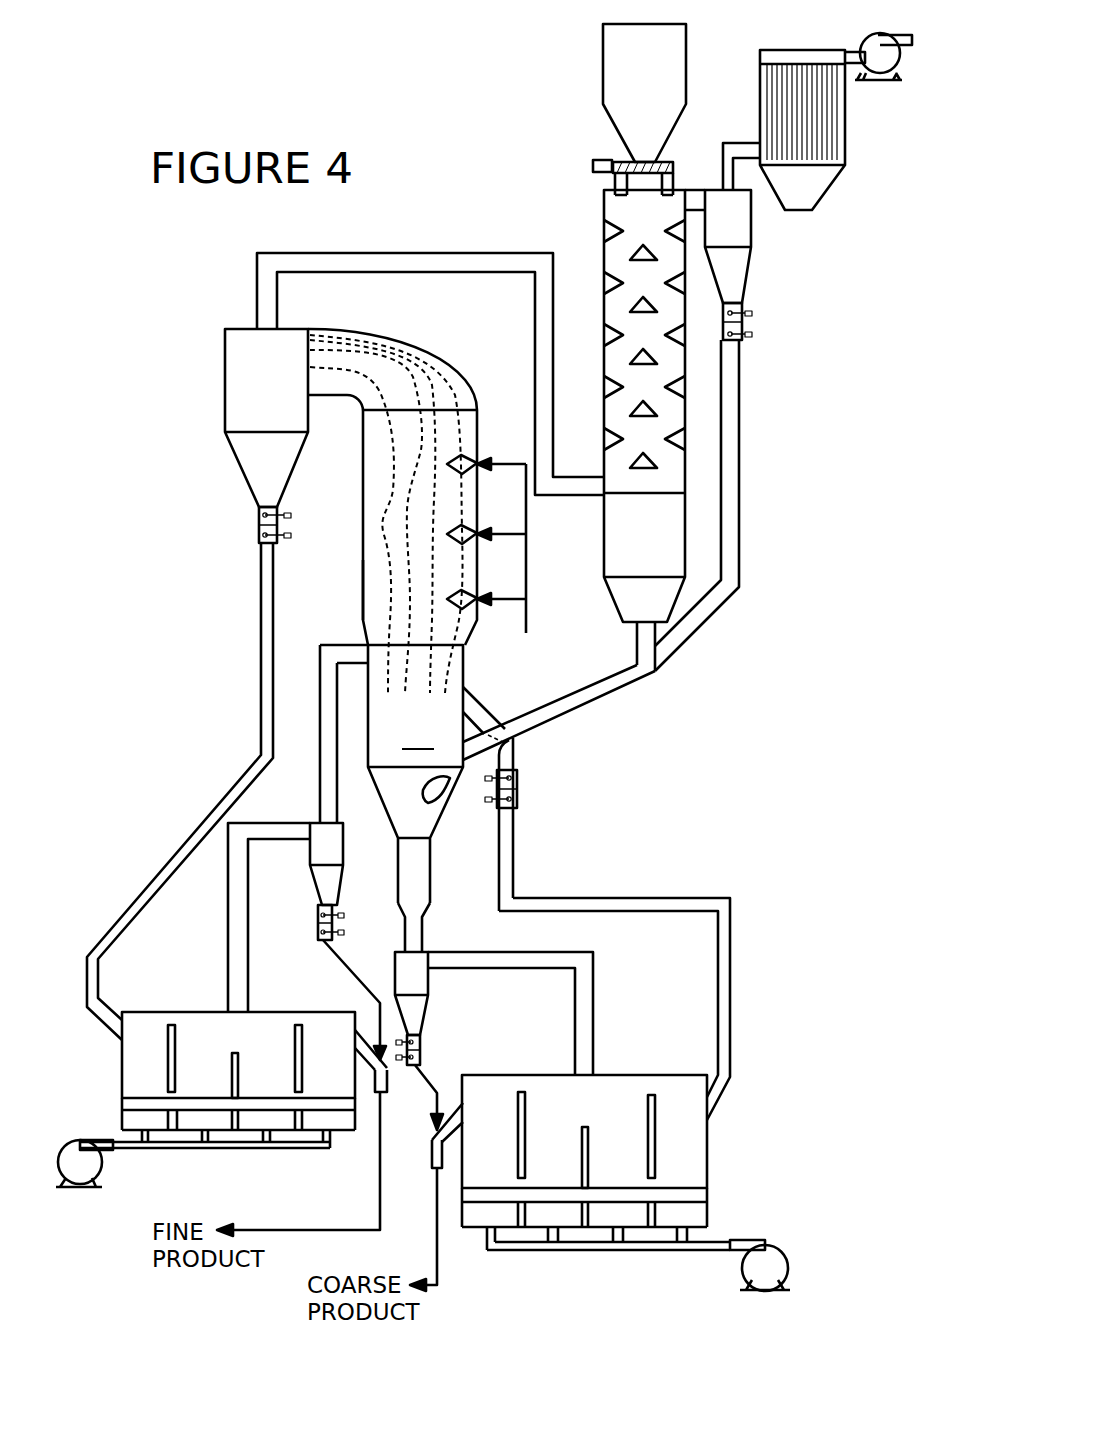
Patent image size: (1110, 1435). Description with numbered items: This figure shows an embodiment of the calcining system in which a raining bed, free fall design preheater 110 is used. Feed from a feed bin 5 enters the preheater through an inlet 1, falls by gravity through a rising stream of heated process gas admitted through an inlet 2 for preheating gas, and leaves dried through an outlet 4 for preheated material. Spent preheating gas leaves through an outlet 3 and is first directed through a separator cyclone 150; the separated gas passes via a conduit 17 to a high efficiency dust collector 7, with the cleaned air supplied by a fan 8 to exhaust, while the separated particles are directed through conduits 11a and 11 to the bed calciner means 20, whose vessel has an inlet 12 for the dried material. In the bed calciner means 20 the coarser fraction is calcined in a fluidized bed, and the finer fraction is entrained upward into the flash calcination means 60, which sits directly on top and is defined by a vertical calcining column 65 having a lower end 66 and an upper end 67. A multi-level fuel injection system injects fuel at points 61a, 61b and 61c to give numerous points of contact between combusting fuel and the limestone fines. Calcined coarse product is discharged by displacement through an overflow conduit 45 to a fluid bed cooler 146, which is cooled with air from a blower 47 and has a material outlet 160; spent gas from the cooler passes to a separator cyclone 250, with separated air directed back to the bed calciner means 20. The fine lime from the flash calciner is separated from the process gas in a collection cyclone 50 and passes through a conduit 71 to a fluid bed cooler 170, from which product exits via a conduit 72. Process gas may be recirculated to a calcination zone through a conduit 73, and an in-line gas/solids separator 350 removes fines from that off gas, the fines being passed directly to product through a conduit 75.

The inlet 1 is at (612, 186).
The inlet for preheating gas 2 is at (604, 497).
The outlet for spent preheating gas 3 is at (703, 190).
The outlet for preheated material 4 is at (637, 630).
The feed bin 5 is at (602, 60).
The high efficiency dust collector 7 is at (845, 110).
The fan 8 is at (862, 45).
The conduit 11 is at (583, 704).
The conduit 11a is at (739, 470).
The inlet 12 is at (468, 767).
The conduit 17 is at (740, 143).
The bed calciner means 20 is at (391, 774).
The overflow conduit 45 is at (470, 700).
The blower 47 is at (770, 1245).
The collection cyclone 50 is at (225, 392).
The flash calcination means 60 is at (363, 552).
The fuel injection point 61a is at (486, 592).
The fuel injection point 61b is at (486, 527).
The fuel injection point 61c is at (486, 536).
The vertical calcining column 65 is at (363, 583).
The lower end 66 is at (363, 628).
The upper end 67 is at (470, 425).
The conduit 71 is at (261, 678).
The conduit 72 is at (380, 1193).
The conduit 73 is at (249, 933).
The conduit 75 is at (352, 980).
The free fall design preheater 110 is at (604, 232).
The fluid bed cooler 146 is at (707, 1166).
The separator cyclone 150 is at (751, 225).
The material outlet 160 is at (453, 1100).
The fluid bed cooler 170 is at (122, 1086).
The separator cyclone 250 is at (428, 980).
The gas/solids separator 350 is at (343, 835).